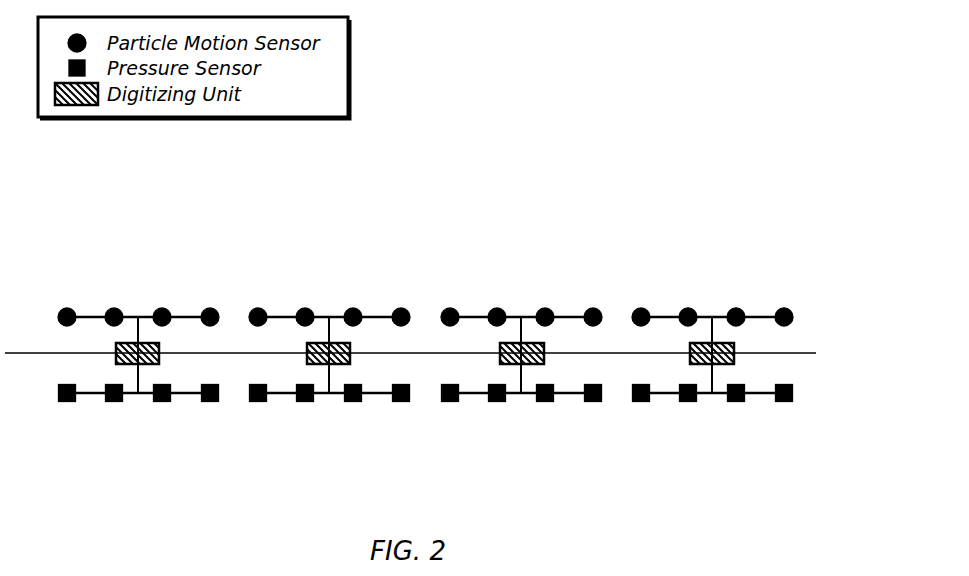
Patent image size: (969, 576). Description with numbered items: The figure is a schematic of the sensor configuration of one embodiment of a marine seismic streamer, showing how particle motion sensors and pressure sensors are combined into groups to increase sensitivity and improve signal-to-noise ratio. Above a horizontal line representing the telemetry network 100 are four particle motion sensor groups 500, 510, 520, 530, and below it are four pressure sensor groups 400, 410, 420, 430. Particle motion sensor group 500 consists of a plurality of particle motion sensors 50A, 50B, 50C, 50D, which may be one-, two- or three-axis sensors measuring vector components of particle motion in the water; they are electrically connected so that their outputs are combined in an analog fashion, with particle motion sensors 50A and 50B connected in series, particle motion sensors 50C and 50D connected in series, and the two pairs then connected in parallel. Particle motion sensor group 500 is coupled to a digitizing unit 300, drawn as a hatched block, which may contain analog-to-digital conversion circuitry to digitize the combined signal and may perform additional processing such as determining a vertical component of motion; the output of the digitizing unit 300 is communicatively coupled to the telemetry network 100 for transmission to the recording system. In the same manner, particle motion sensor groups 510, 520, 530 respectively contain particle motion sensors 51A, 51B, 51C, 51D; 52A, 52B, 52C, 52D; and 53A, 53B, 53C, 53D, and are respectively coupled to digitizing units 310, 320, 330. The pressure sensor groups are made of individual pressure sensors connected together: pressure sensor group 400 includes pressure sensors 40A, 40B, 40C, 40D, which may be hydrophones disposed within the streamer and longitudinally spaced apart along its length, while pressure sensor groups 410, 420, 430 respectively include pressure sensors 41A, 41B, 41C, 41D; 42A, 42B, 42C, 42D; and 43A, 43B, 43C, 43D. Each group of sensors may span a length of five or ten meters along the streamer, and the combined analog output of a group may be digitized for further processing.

The telemetry network 100 is at (37, 353).
The digitizing unit 300 is at (151, 362).
The digitizing unit 310 is at (342, 362).
The digitizing unit 320 is at (534, 362).
The digitizing unit 330 is at (725, 362).
The pressure sensor group 400 is at (143, 450).
The pressure sensor group 410 is at (334, 450).
The pressure sensor group 420 is at (526, 452).
The pressure sensor group 430 is at (717, 456).
The particle motion sensor group 500 is at (133, 264).
The particle motion sensor group 510 is at (324, 264).
The particle motion sensor group 520 is at (516, 264).
The particle motion sensor group 530 is at (707, 264).
The pressure sensor 40A is at (67, 402).
The pressure sensor 40B is at (114, 402).
The pressure sensor 40C is at (162, 402).
The pressure sensor 40D is at (210, 402).
The pressure sensor 41A is at (258, 402).
The pressure sensor 41B is at (305, 402).
The pressure sensor 41C is at (353, 402).
The pressure sensor 41D is at (401, 402).
The pressure sensor 42A is at (450, 402).
The pressure sensor 42B is at (497, 402).
The pressure sensor 42C is at (545, 402).
The pressure sensor 42D is at (593, 402).
The pressure sensor 43A is at (641, 402).
The pressure sensor 43B is at (688, 402).
The pressure sensor 43C is at (736, 402).
The pressure sensor 43D is at (784, 402).
The particle motion sensor 50A is at (67, 308).
The particle motion sensor 50B is at (114, 308).
The particle motion sensor 50C is at (162, 308).
The particle motion sensor 50D is at (210, 308).
The particle motion sensor 51A is at (258, 308).
The particle motion sensor 51B is at (305, 308).
The particle motion sensor 51C is at (353, 308).
The particle motion sensor 51D is at (401, 308).
The particle motion sensor 52A is at (450, 308).
The particle motion sensor 52B is at (497, 308).
The particle motion sensor 52C is at (545, 308).
The particle motion sensor 52D is at (593, 308).
The particle motion sensor 53A is at (641, 308).
The particle motion sensor 53B is at (688, 308).
The particle motion sensor 53C is at (736, 308).
The particle motion sensor 53D is at (784, 308).